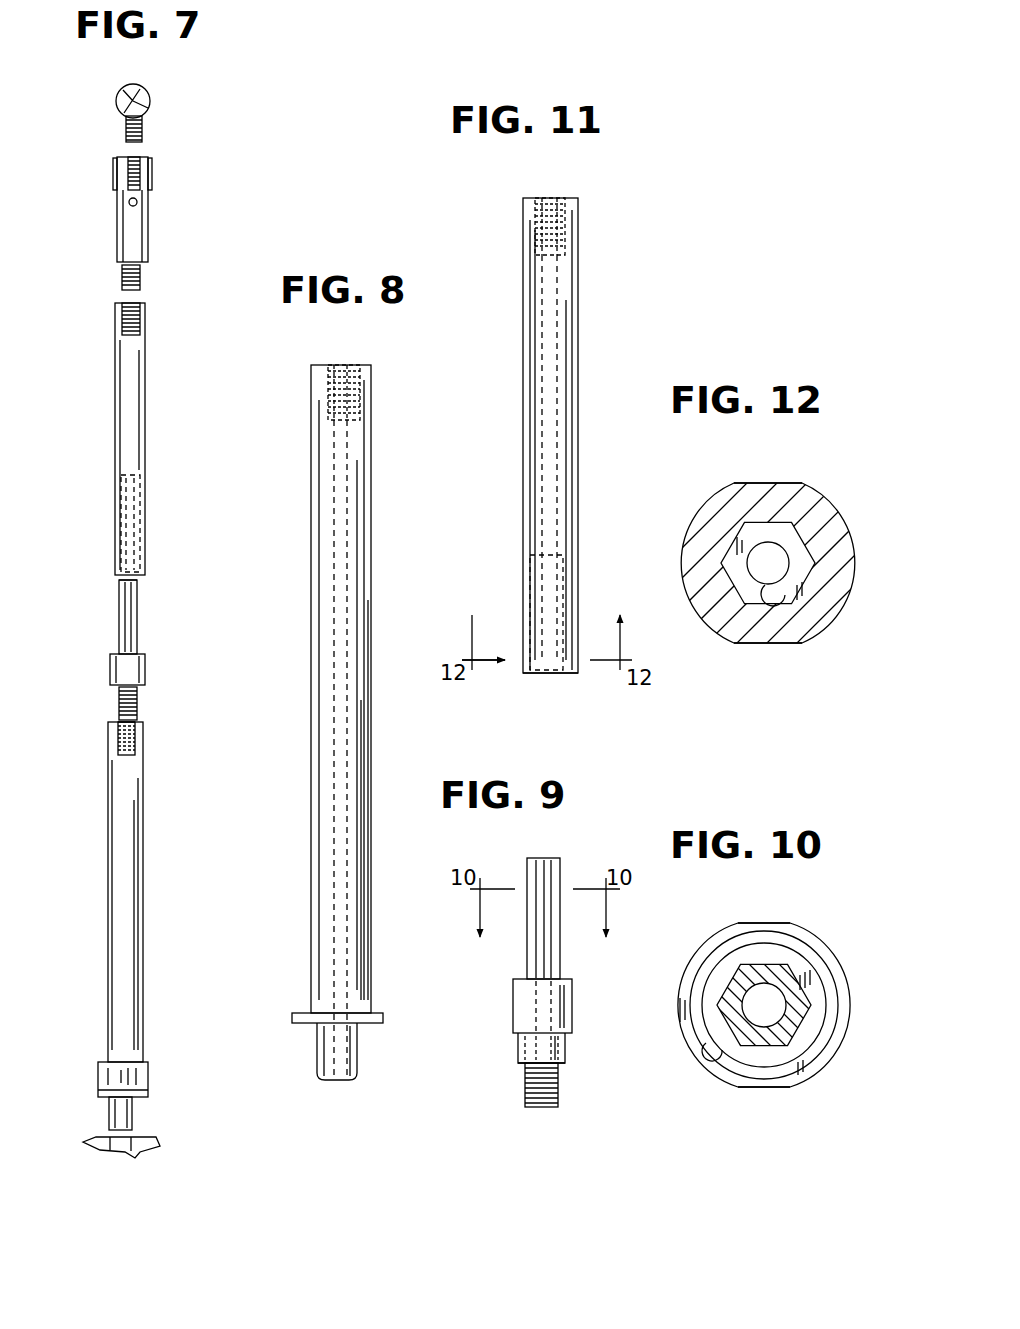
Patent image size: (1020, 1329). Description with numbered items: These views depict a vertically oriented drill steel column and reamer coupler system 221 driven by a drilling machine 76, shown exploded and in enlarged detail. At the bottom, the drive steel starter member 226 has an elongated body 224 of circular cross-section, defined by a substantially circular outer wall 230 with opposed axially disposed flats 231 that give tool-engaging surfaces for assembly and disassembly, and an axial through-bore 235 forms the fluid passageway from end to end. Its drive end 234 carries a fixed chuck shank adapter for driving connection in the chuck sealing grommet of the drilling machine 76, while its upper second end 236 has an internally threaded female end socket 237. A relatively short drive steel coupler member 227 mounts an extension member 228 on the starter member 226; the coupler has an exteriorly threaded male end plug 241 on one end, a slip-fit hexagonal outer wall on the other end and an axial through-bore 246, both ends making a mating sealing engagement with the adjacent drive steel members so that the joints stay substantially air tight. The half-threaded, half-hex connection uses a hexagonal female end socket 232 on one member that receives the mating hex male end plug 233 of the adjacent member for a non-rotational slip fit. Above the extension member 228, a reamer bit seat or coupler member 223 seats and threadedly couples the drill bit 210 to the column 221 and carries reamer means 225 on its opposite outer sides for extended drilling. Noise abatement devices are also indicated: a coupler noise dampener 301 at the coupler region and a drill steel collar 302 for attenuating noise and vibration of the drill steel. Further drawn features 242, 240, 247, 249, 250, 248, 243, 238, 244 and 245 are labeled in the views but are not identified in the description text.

In FIG. 7, the drill bit 210 is at (170, 127).
In FIG. 7, the reamer bit seat or coupler member 223 is at (166, 231).
In FIG. 7, the reamer means 225 is at (112, 186).
In FIG. 7, the extension member 228 is at (150, 380).
In FIG. 11, the extension member 228 is at (588, 366).
In FIG. 12, the extension member 228 is at (846, 501).
In FIG. 7, the drill steel column and reamer coupler system 221 is at (162, 519).
In FIG. 7, the hexagonal female end socket 232 is at (136, 585).
In FIG. 11, the hexagonal female end socket 232 is at (536, 592).
In FIG. 12, the hexagonal female end socket 232 is at (722, 570).
In FIG. 7, the rod top 242 is at (122, 580).
In FIG. 9, the rod top 242 is at (556, 855).
In FIG. 7, the hex male end plug 233 is at (120, 606).
In FIG. 9, the hex male end plug 233 is at (527, 880).
In FIG. 10, the hex male end plug 233 is at (805, 1016).
In FIG. 7, the drive steel coupler member 227 is at (162, 639).
In FIG. 9, the drive steel coupler member 227 is at (592, 1011).
In FIG. 10, the drive steel coupler member 227 is at (830, 941).
In FIG. 7, the exteriorly threaded male end plug 241 is at (140, 700).
In FIG. 7, the threaded stud 240 is at (137, 708).
In FIG. 9, the threaded stud 240 is at (526, 1108).
In FIG. 7, the internally threaded female end socket 237 is at (122, 716).
In FIG. 8, the internally threaded female end socket 237 is at (356, 400).
In FIG. 11, the internally threaded female end socket 237 is at (565, 236).
In FIG. 7, the upper second end 236 is at (114, 722).
In FIG. 8, the upper second end 236 is at (350, 365).
In FIG. 7, the elongated body 224 is at (146, 811).
In FIG. 8, the elongated body 224 is at (378, 746).
In FIG. 7, the drive steel starter member 226 is at (158, 973).
In FIG. 8, the drive steel starter member 226 is at (388, 629).
In FIG. 7, the drill steel collar 302 is at (150, 1076).
In FIG. 7, the drive end 234 is at (110, 1118).
In FIG. 8, the drive end 234 is at (314, 1037).
In FIG. 7, the drilling machine 76 is at (163, 1139).
In FIG. 8, the circular outer wall 230 is at (311, 535).
In FIG. 12, the circular outer wall 230 is at (856, 583).
In FIG. 10, the circular outer wall 230 is at (732, 926).
In FIG. 8, the axial through-bore 235 is at (348, 482).
In FIG. 11, the tube wall 247 is at (520, 431).
In FIG. 11, the thread 249 is at (560, 198).
In FIG. 11, the inner bore 250 is at (560, 482).
In FIG. 12, the inner bore 250 is at (805, 618).
In FIG. 11, the tube end 248 is at (525, 673).
In FIG. 12, the flats 231 is at (748, 483).
In FIG. 10, the flats 231 is at (790, 923).
In FIG. 9, the nut 243 is at (513, 981).
In FIG. 10, the nut 243 is at (838, 988).
In FIG. 9, the adapter 238 is at (510, 996).
In FIG. 9, the coupler noise dampener 301 is at (510, 1064).
In FIG. 10, the recess 244 is at (724, 1062).
In FIG. 10, the slot 245 is at (808, 1062).
In FIG. 10, the axial through-bore 246 is at (784, 1050).